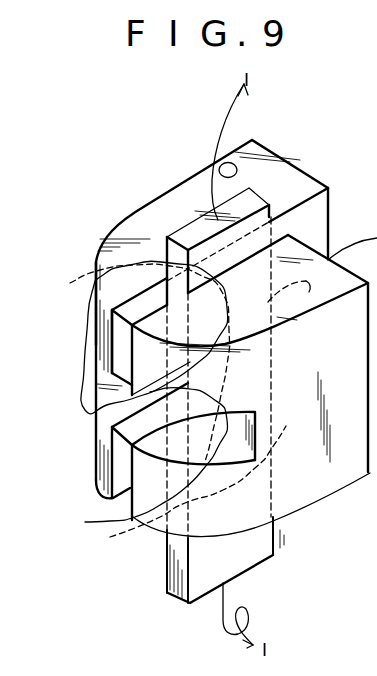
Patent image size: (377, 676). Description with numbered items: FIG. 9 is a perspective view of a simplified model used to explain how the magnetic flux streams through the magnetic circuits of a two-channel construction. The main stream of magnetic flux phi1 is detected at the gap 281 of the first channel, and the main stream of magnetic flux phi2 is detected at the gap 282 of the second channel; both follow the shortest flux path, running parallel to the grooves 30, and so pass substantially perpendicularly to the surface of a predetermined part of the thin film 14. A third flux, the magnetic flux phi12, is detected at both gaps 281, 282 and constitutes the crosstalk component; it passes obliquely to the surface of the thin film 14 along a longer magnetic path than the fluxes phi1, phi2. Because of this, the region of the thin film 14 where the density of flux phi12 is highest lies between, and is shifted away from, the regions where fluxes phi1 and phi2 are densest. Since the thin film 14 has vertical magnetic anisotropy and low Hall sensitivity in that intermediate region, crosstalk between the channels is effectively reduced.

The thin film 14 is at (265, 547).
The grooves 30 is at (103, 395).
The gap of the first channel 281 is at (103, 345).
The gap of the second channel 282 is at (100, 470).
The magnetic flux phi 1 phi1 is at (88, 413).
The magnetic flux phi 2 phi2 is at (96, 526).
The magnetic flux phi 12 phi12 is at (108, 539).